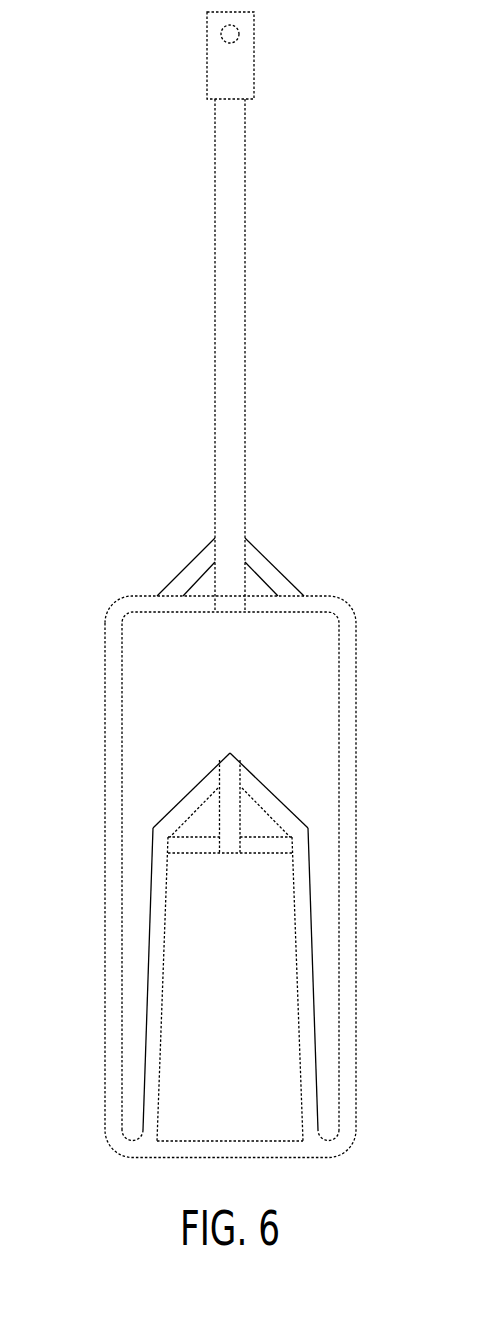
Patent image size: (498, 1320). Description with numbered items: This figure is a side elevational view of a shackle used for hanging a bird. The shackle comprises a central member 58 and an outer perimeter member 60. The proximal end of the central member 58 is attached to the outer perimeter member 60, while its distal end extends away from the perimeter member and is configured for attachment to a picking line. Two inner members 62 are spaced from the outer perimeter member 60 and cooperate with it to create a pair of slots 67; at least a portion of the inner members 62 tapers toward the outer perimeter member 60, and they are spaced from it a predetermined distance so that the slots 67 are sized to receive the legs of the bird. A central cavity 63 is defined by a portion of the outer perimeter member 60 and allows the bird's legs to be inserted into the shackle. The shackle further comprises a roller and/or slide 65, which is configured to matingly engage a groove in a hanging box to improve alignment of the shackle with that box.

The central member 58 is at (227, 255).
The outer perimeter member 60 is at (117, 770).
The inner members 62 is at (160, 922).
The central cavity 63 is at (135, 668).
The roller and/or slide 65 is at (229, 768).
The slots 67 is at (135, 1037).